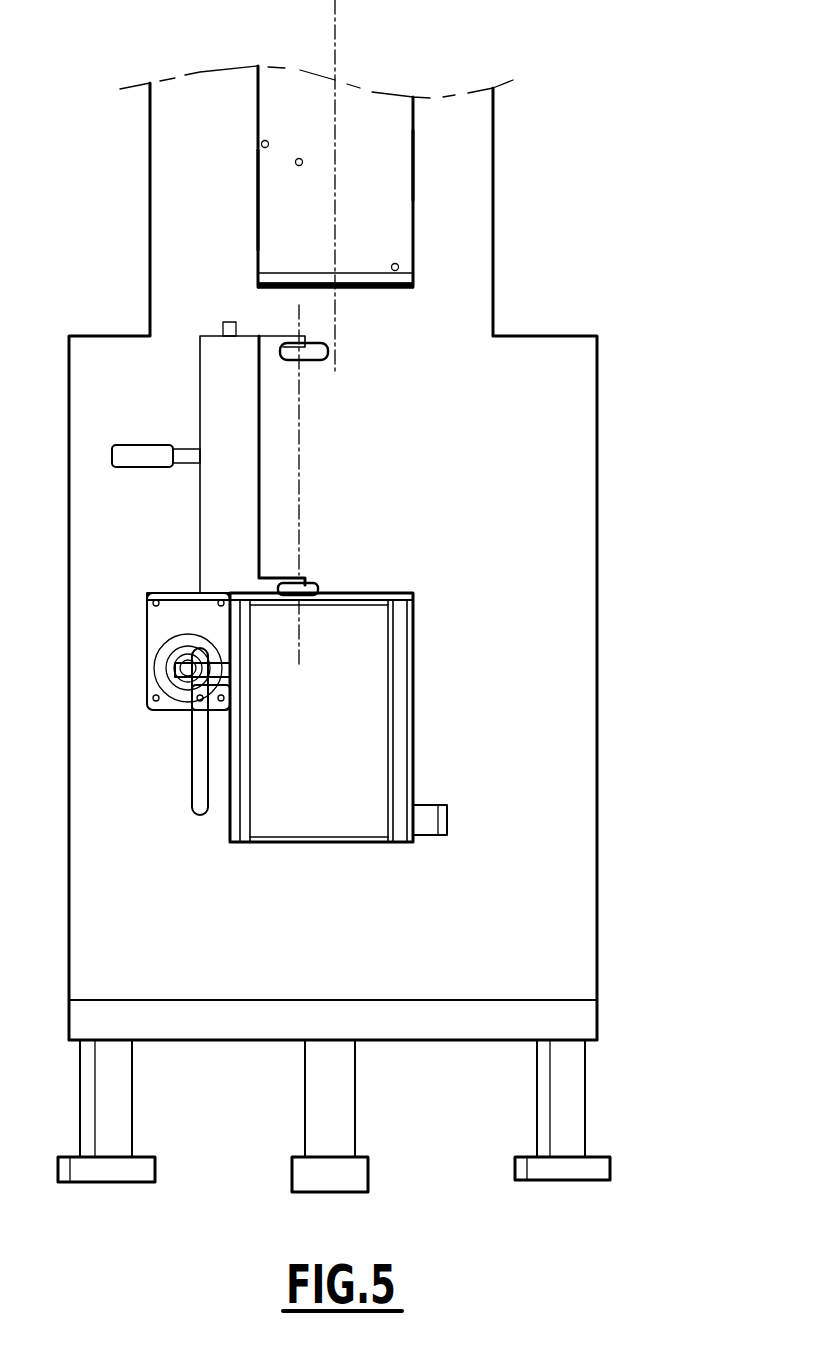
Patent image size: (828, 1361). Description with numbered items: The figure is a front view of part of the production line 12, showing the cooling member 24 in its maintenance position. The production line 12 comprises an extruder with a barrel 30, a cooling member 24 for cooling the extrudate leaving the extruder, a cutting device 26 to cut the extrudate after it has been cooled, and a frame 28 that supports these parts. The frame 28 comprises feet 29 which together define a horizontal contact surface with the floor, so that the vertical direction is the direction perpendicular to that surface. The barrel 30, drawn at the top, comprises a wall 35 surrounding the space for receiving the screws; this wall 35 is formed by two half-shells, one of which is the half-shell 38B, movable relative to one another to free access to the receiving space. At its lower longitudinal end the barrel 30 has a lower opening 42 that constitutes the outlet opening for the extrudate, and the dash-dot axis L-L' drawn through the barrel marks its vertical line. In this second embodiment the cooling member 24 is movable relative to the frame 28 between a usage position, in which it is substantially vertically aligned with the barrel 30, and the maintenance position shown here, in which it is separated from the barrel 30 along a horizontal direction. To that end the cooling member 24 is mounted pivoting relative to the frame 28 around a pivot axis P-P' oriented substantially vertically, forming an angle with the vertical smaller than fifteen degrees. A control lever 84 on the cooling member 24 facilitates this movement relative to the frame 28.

The production line 12 is at (596, 104).
The cooling member 24 is at (270, 455).
The cutting device 26 is at (437, 695).
The frame 28 is at (598, 595).
The feet 29 is at (315, 1103).
The barrel 30 is at (392, 218).
The wall 35 is at (273, 196).
The half-shell 38B is at (393, 164).
The lower opening 42 is at (335, 287).
The control lever 84 is at (148, 452).
The axis L is at (301, 186).
The axis L' is at (369, 353).
The pivot axis P-P' P is at (263, 426).
The pivot axis P- P' is at (335, 632).